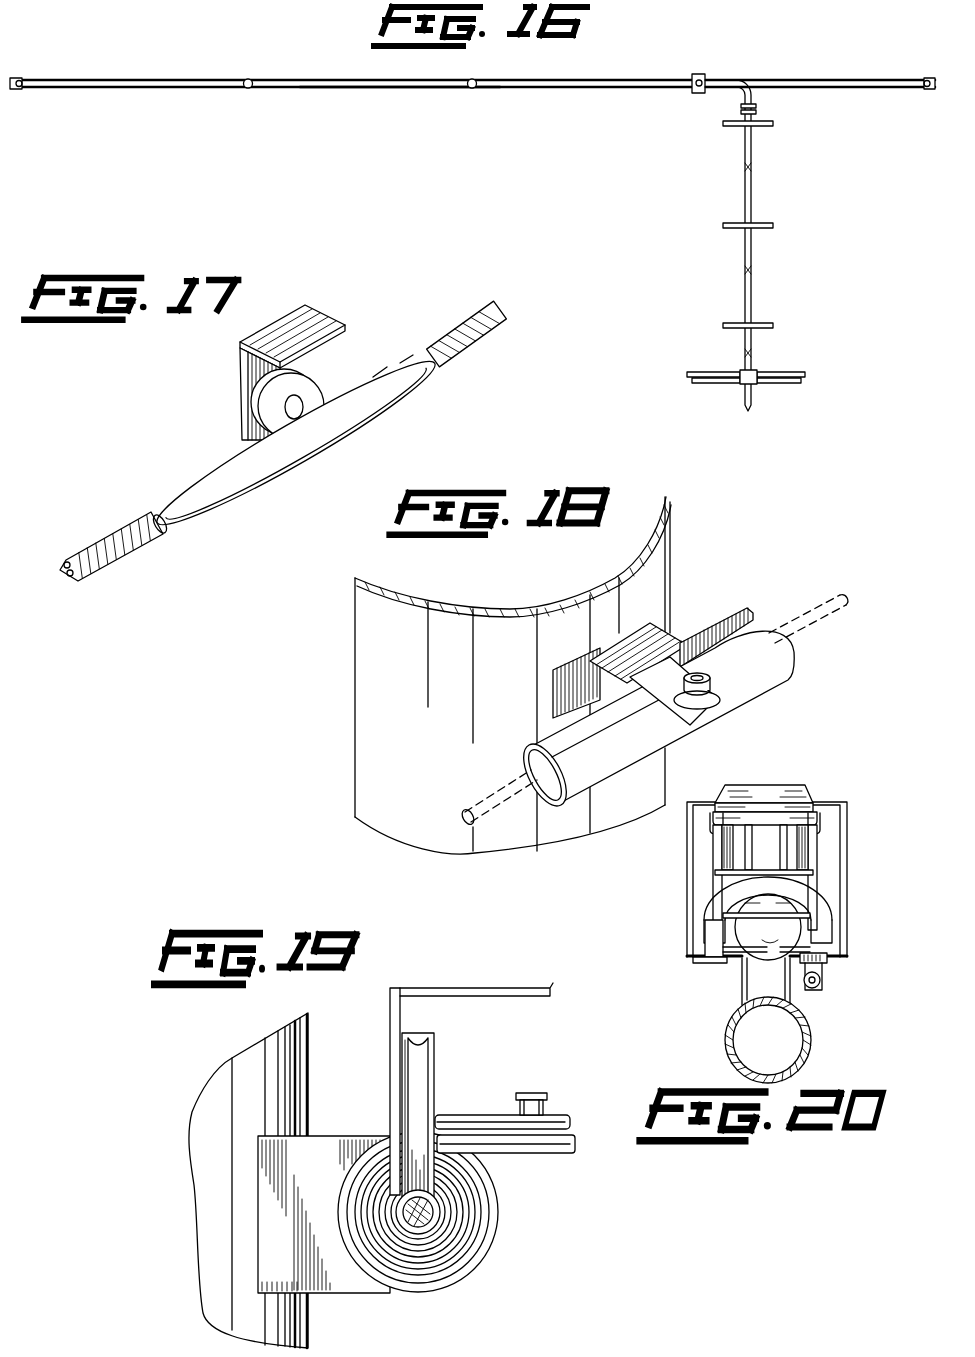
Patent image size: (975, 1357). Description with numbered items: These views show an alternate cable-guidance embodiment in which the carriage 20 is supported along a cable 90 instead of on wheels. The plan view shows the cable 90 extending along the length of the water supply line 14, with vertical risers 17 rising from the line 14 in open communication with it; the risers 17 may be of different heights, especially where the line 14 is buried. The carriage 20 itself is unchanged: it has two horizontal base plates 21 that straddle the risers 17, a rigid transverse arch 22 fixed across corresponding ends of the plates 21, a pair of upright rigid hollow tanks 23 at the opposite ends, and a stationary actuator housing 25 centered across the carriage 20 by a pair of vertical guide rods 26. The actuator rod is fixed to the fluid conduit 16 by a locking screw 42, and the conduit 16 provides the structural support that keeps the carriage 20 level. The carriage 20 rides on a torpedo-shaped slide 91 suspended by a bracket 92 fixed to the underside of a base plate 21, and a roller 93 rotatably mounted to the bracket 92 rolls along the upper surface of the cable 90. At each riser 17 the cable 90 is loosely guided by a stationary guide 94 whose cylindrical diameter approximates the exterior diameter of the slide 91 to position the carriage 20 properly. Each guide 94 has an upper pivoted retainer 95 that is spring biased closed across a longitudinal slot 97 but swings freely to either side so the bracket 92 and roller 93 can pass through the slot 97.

In FIG. 16, the water supply line 14 is at (418, 82).
In FIG. 16, the fluid conduit 16 is at (728, 80).
In FIG. 16, the vertical riser 17 is at (250, 79).
In FIG. 18, the vertical riser 17 is at (432, 836).
In FIG. 19, the vertical riser 17 is at (293, 1045).
In FIG. 16, the carriage 20 is at (703, 93).
In FIG. 20, the carriage 20 is at (682, 956).
In FIG. 20, the horizontal base plate 21 is at (706, 961).
In FIG. 20, the transverse arch 22 is at (720, 926).
In FIG. 20, the upright rigid hollow tank 23 is at (693, 889).
In FIG. 20, the stationary actuator housing 25 is at (803, 786).
In FIG. 20, the guide rod 26 is at (713, 848).
In FIG. 19, the locking screw 42 is at (493, 985).
In FIG. 16, the cable 90 is at (395, 90).
In FIG. 17, the cable 90 is at (100, 568).
In FIG. 18, the cable 90 is at (505, 787).
In FIG. 19, the cable 90 is at (432, 1214).
In FIG. 17, the torpedo-shaped slide 91 is at (238, 495).
In FIG. 19, the torpedo-shaped slide 91 is at (438, 1198).
In FIG. 17, the bracket 92 is at (322, 317).
In FIG. 17, the roller 93 is at (312, 404).
In FIG. 19, the roller 93 is at (420, 1068).
In FIG. 18, the stationary guide 94 is at (612, 786).
In FIG. 19, the stationary guide 94 is at (477, 1250).
In FIG. 18, the pivoted retainer 95 is at (665, 717).
In FIG. 19, the pivoted retainer 95 is at (493, 1115).
In FIG. 18, the longitudinal slot 97 is at (727, 618).
In FIG. 19, the longitudinal slot 97 is at (360, 1146).